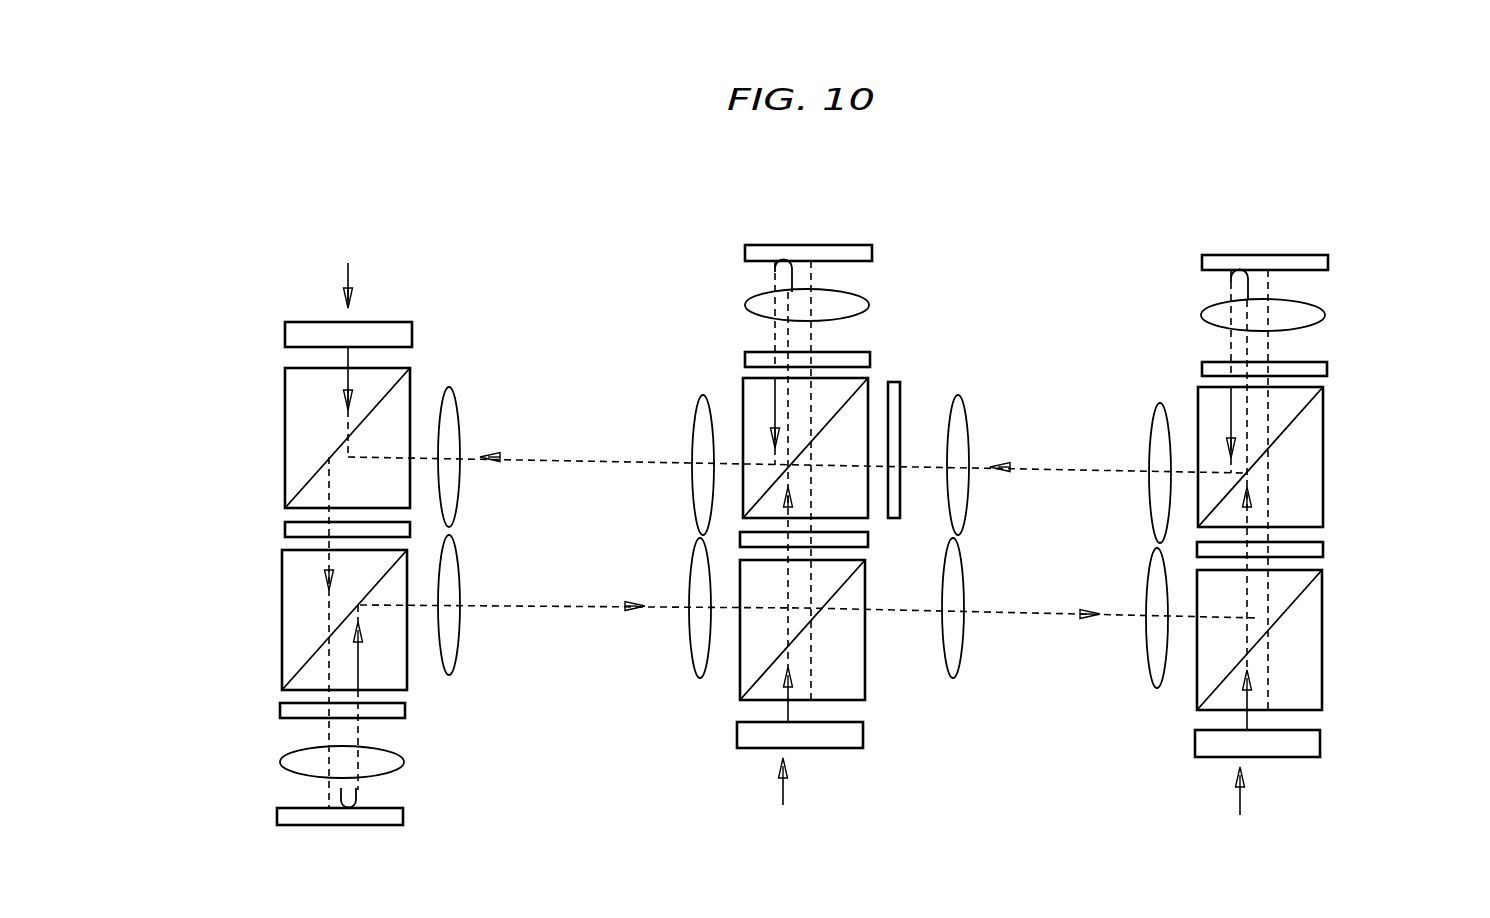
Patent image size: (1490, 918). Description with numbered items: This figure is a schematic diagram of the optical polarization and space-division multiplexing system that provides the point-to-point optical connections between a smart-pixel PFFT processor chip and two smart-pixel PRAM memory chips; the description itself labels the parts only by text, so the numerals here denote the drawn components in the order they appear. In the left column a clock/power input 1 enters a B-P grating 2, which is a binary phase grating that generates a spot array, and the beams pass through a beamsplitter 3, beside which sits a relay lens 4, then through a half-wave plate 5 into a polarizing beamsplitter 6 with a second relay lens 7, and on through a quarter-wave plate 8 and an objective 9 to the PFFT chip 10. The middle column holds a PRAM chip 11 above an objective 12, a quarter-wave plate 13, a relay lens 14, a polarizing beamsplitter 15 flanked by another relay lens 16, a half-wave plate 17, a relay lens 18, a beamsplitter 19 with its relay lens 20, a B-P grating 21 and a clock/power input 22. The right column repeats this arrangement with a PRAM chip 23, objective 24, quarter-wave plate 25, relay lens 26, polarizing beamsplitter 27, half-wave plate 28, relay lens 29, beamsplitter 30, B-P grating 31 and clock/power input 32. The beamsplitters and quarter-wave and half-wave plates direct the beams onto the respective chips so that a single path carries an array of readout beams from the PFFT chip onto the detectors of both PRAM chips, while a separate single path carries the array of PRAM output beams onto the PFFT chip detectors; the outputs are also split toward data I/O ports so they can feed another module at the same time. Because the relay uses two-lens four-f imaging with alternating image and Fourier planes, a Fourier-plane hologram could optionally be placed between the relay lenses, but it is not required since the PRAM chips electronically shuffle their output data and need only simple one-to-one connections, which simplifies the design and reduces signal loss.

The clock/power input (left) 1 is at (350, 263).
The B-P grating (left) 2 is at (267, 332).
The beam splitter BS (left) 3 is at (325, 438).
The relay lens (left upper) 4 is at (480, 418).
The half-wave plate (left) 5 is at (281, 529).
The polarizing beam splitter PBS (left) 6 is at (317, 620).
The relay lens (left lower) 7 is at (480, 596).
The quarter-wave plate (left) 8 is at (409, 731).
The objective (left) 9 is at (281, 759).
The PFFT chip 10 is at (340, 829).
The PRAM chip (middle) 11 is at (808, 245).
The objective (middle) 12 is at (869, 306).
The quarter-wave plate (middle) 13 is at (744, 349).
The relay lens (middle upper left) 14 is at (668, 459).
The polarizing beam splitter PBS (middle) 15 is at (805, 448).
The relay lens (middle upper right) 16 is at (991, 459).
The half-wave plate (middle) 17 is at (866, 541).
The relay lens (middle lower left) 18 is at (666, 600).
The beam splitter BS (middle) 19 is at (823, 630).
The relay lens (middle lower right) 20 is at (988, 618).
The B-P grating (middle) 21 is at (877, 737).
The clock/power input (middle) 22 is at (800, 805).
The PRAM chip (right) 23 is at (1265, 253).
The objective (right) 24 is at (1324, 314).
The quarter-wave plate (right) 25 is at (1197, 361).
The relay lens (right upper) 26 is at (1124, 465).
The polarizing beam splitter PBS (right) 27 is at (1287, 457).
The half-wave plate (right) 28 is at (1325, 552).
The relay lens (right lower) 29 is at (1123, 626).
The beam splitter BS (right) 30 is at (1279, 641).
The B-P grating (right) 31 is at (1335, 746).
The clock/power input (right) 32 is at (1257, 815).